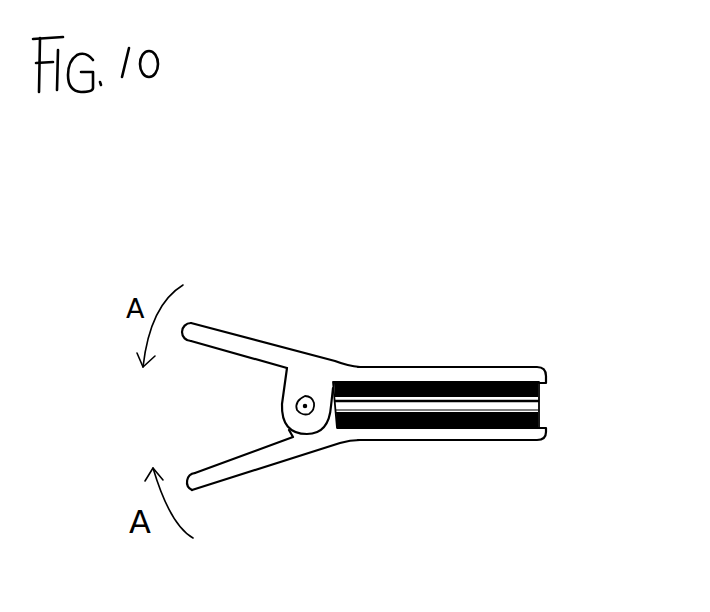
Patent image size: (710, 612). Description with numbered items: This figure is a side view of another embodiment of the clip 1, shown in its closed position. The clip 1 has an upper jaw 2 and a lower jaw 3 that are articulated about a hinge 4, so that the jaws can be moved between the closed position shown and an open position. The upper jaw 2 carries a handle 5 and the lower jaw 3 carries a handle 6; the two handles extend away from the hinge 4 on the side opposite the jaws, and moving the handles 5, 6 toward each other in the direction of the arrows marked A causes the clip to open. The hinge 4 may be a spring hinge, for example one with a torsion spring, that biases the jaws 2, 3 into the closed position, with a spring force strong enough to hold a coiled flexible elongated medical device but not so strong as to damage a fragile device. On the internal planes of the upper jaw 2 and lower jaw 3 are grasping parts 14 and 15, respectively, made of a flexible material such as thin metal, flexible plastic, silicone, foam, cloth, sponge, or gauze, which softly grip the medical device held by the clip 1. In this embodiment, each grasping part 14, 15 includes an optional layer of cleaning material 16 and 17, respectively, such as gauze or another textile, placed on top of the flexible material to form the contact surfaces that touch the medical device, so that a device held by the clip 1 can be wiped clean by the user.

The clip 1 is at (470, 359).
The upper jaw 2 is at (377, 379).
The lower jaw 3 is at (379, 433).
The hinge 4 is at (297, 410).
The handle 5 is at (232, 343).
The handle 6 is at (233, 472).
The grasping part 14 is at (539, 383).
The grasping part 15 is at (540, 419).
The layer of cleaning material 16 is at (539, 400).
The layer of cleaning material 17 is at (539, 407).